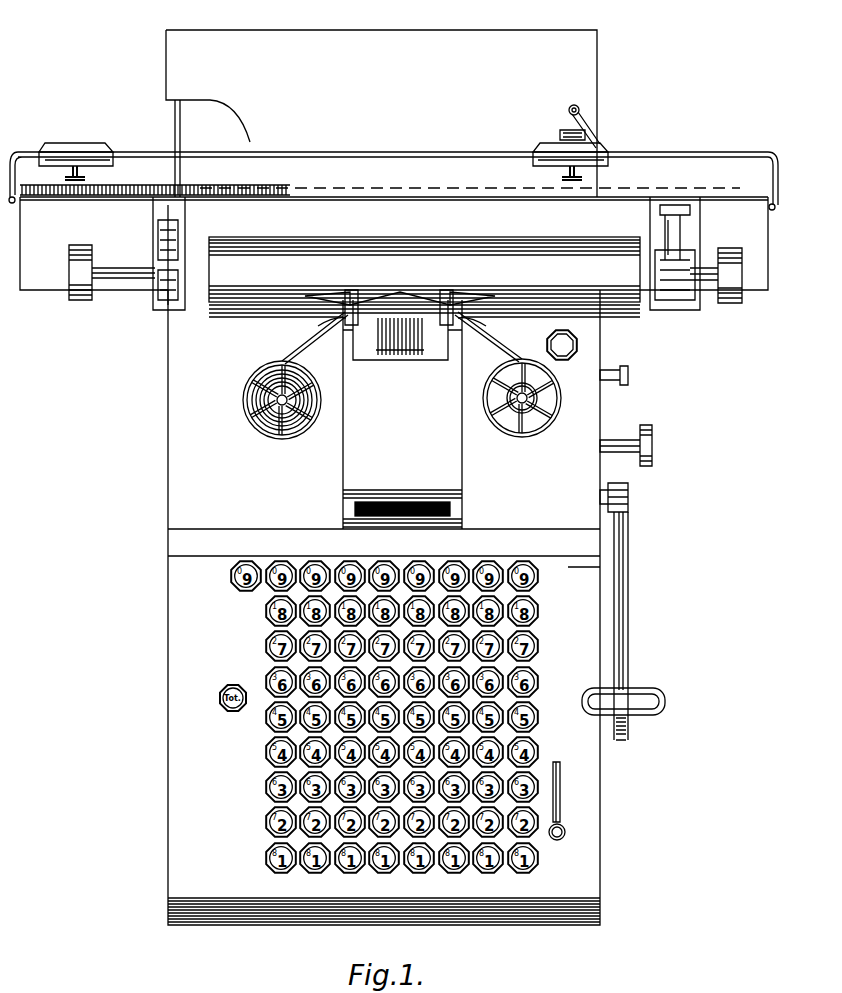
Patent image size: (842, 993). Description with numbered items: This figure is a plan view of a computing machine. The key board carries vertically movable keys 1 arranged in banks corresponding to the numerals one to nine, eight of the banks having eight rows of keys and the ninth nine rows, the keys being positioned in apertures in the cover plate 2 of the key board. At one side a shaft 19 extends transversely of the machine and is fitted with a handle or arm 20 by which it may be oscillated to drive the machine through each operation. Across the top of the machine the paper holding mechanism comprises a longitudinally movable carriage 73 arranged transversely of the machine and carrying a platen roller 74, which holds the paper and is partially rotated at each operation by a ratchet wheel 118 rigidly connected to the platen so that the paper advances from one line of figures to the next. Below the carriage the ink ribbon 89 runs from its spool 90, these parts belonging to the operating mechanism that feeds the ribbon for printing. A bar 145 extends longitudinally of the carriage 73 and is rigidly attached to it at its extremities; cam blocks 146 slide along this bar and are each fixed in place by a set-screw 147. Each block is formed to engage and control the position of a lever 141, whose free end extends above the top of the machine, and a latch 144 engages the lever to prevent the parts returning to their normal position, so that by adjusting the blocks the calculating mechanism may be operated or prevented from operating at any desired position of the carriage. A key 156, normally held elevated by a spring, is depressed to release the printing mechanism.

The keys 1 is at (272, 777).
The cover plate of the key board 2 is at (233, 820).
The shaft 19 is at (630, 496).
The handle or arm 20 is at (630, 602).
The carriage 73 is at (286, 247).
The platen roller 74 is at (424, 269).
The ink ribbon 89 is at (310, 340).
The spool 90 is at (290, 440).
The ratchet wheel 118 is at (682, 258).
The lever 141 is at (568, 128).
The latch 144 is at (586, 114).
The bar 145 is at (672, 152).
The cam blocks 146 is at (88, 143).
The set-screw 147 is at (86, 178).
The key 156 is at (548, 340).